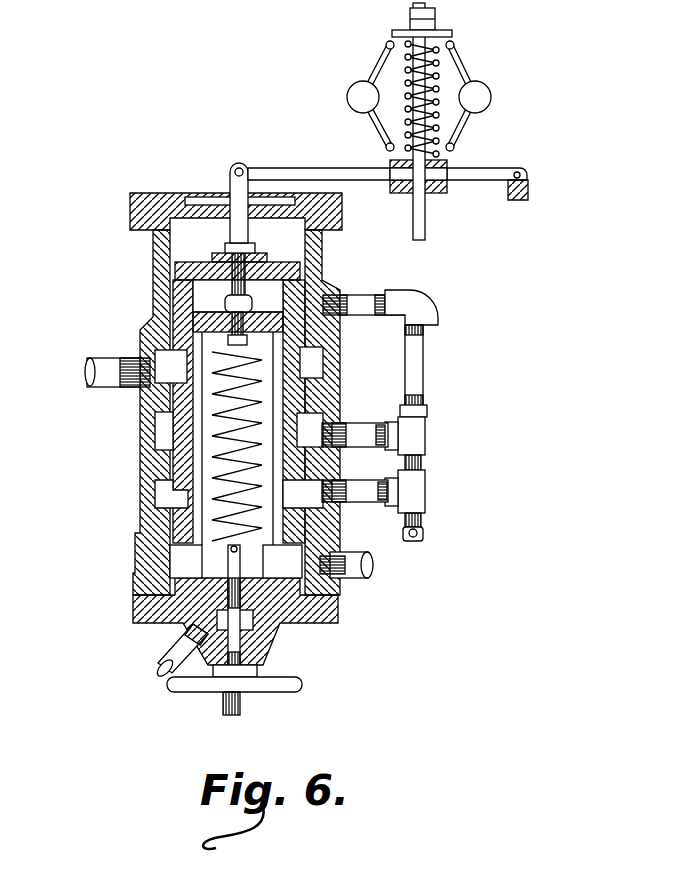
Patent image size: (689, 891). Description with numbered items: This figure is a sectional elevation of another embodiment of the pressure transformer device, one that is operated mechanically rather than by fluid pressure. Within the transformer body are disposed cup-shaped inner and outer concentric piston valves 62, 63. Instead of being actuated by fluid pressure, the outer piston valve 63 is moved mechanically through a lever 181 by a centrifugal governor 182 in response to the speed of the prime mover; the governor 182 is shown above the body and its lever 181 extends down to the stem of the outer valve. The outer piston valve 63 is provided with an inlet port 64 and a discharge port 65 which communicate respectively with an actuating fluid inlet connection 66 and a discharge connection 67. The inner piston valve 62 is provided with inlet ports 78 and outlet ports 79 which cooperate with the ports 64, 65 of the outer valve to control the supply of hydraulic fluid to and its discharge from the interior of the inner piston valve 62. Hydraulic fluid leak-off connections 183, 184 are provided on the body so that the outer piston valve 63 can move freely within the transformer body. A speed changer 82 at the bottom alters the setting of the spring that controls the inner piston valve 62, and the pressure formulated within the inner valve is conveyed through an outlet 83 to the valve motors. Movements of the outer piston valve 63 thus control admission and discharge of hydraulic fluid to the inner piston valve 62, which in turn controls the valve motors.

The inner piston valve 62 is at (332, 463).
The outer piston valve 63 is at (290, 402).
The inlet port 64 is at (175, 380).
The discharge port 65 is at (178, 438).
The actuating fluid inlet connection 66 is at (87, 368).
The discharge connection 67 is at (345, 426).
The inlet ports 78 is at (207, 350).
The outlet ports 79 is at (197, 452).
The speed changer 82 is at (275, 681).
The outlet 83 is at (368, 575).
The lever 181 is at (327, 141).
The centrifugal governor 182 is at (491, 105).
The hydraulic fluid leak-off connection 183 is at (345, 293).
The hydraulic fluid leak-off connection 184 is at (340, 505).